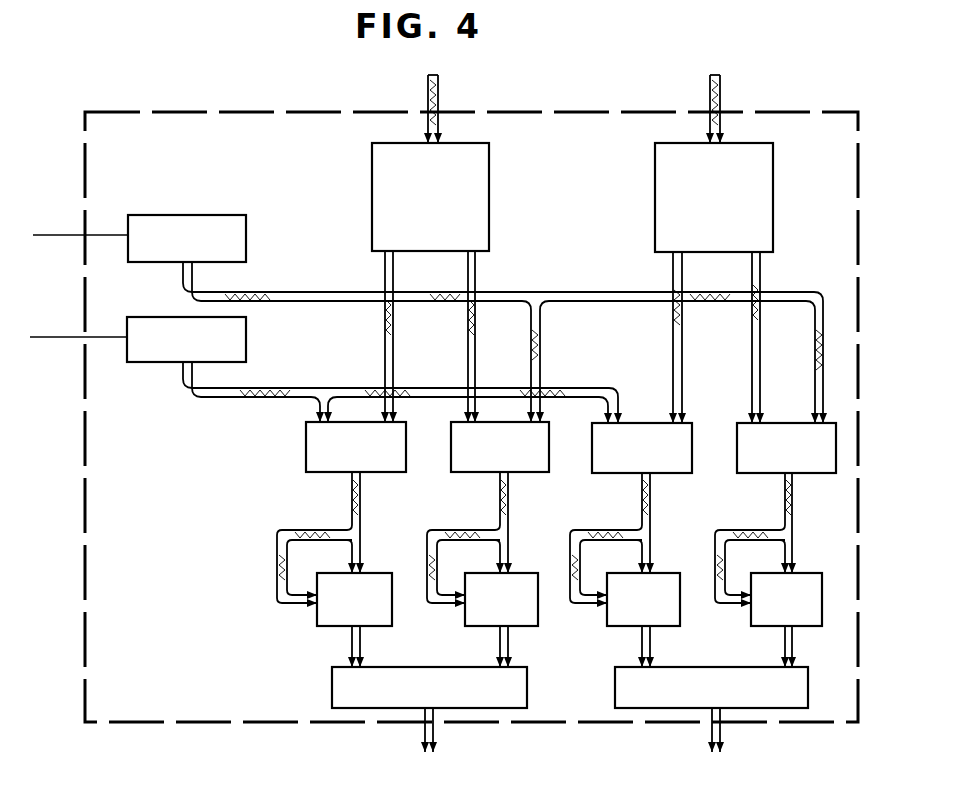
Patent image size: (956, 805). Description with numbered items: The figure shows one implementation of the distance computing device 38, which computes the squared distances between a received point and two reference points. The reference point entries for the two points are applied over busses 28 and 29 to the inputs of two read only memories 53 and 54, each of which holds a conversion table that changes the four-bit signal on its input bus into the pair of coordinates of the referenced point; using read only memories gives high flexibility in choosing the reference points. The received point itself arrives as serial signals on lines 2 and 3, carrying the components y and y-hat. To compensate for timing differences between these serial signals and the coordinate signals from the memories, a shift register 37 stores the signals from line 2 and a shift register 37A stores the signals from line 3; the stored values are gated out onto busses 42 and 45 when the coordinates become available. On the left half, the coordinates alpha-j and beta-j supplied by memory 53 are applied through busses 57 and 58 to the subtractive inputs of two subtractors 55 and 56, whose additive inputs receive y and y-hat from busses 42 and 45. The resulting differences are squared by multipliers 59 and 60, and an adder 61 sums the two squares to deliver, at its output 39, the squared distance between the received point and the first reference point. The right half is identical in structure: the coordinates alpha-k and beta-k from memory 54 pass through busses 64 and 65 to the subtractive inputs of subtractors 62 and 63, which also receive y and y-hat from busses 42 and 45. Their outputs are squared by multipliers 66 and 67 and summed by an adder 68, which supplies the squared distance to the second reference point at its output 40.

The distance computing device 38 is at (166, 112).
The line 3 is at (69, 235).
The line 2 is at (63, 337).
The shift register 37A is at (246, 240).
The shift register 37 is at (148, 317).
The read only memory 53 is at (372, 170).
The read only memory 54 is at (655, 170).
The bus 28 is at (428, 90).
The bus 29 is at (710, 90).
The bus 57 is at (385, 276).
The bus 58 is at (468, 272).
The bus 64 is at (673, 276).
The bus 65 is at (752, 272).
The bus 45 is at (553, 292).
The bus 42 is at (279, 388).
The subtractor 55 is at (310, 474).
The subtractor 56 is at (458, 474).
The subtractor 62 is at (600, 475).
The subtractor 63 is at (747, 475).
The multiplier 59 is at (372, 573).
The multiplier 60 is at (520, 573).
The multiplier 66 is at (662, 573).
The multiplier 67 is at (805, 573).
The adder 61 is at (332, 682).
The adder 68 is at (615, 682).
The output 39 is at (425, 745).
The output 40 is at (712, 745).